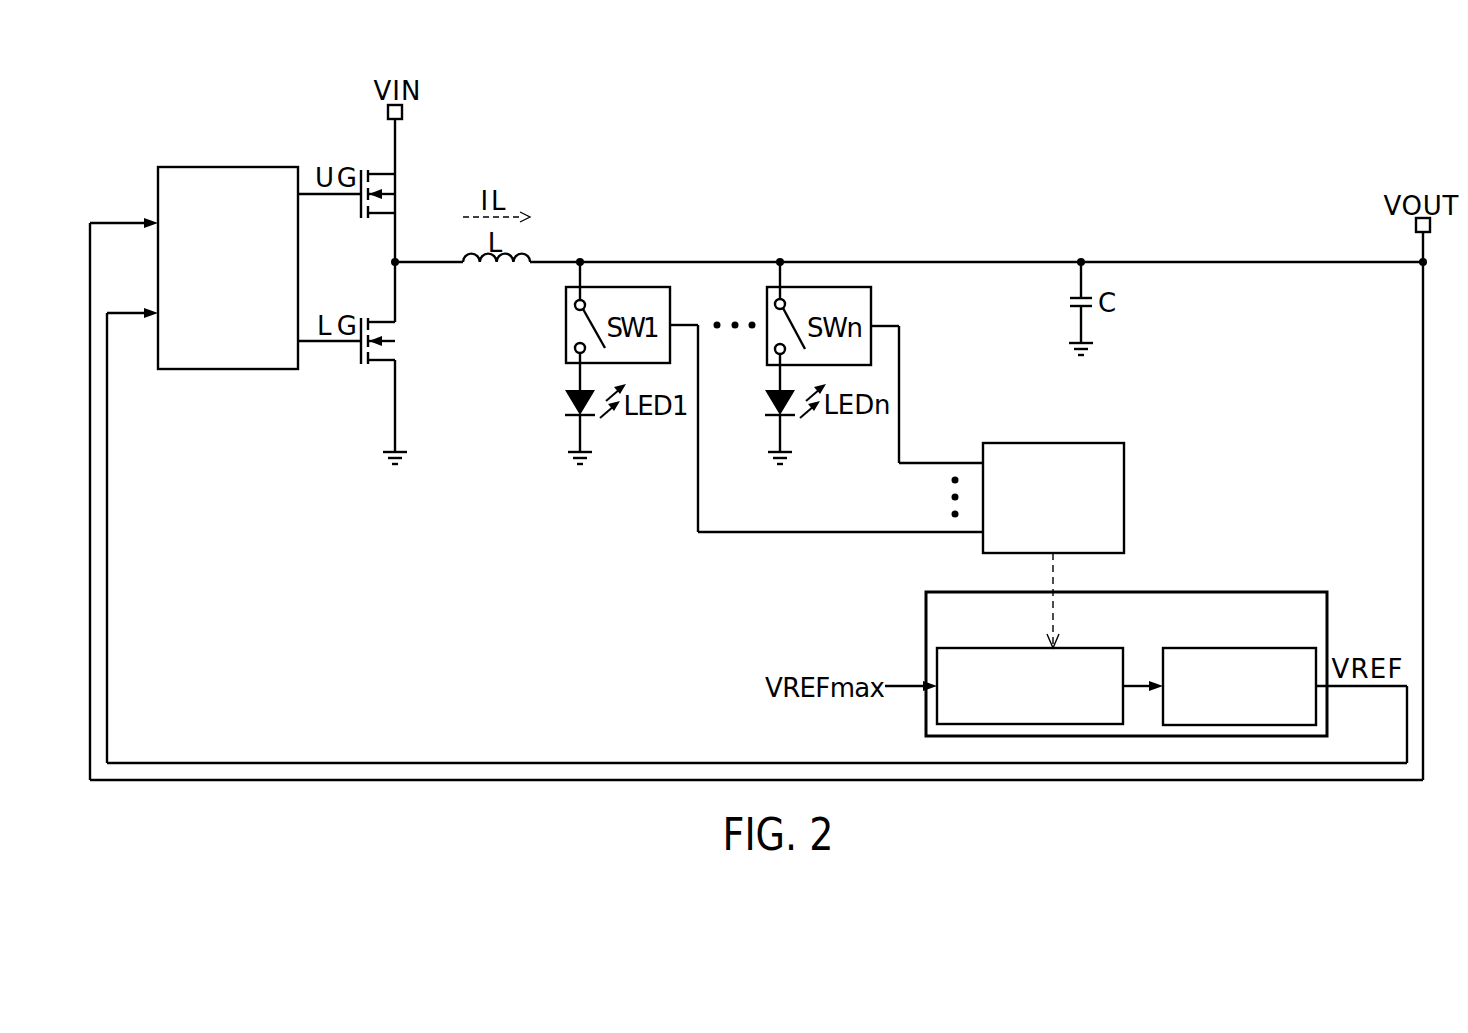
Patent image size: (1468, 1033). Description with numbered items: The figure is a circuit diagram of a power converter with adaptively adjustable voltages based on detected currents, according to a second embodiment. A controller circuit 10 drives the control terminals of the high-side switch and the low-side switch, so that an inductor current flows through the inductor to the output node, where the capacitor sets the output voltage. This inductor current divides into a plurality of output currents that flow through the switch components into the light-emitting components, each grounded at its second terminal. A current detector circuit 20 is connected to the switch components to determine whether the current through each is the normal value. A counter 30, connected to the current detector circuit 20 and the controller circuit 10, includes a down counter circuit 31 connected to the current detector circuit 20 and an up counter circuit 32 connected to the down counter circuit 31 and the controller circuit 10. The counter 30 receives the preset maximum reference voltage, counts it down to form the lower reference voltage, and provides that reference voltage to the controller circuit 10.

The controller circuit 10 is at (229, 167).
The current detector circuit 20 is at (1053, 443).
The counter 30 is at (1200, 592).
The down counter circuit 31 is at (985, 648).
The up counter circuit 32 is at (1230, 648).